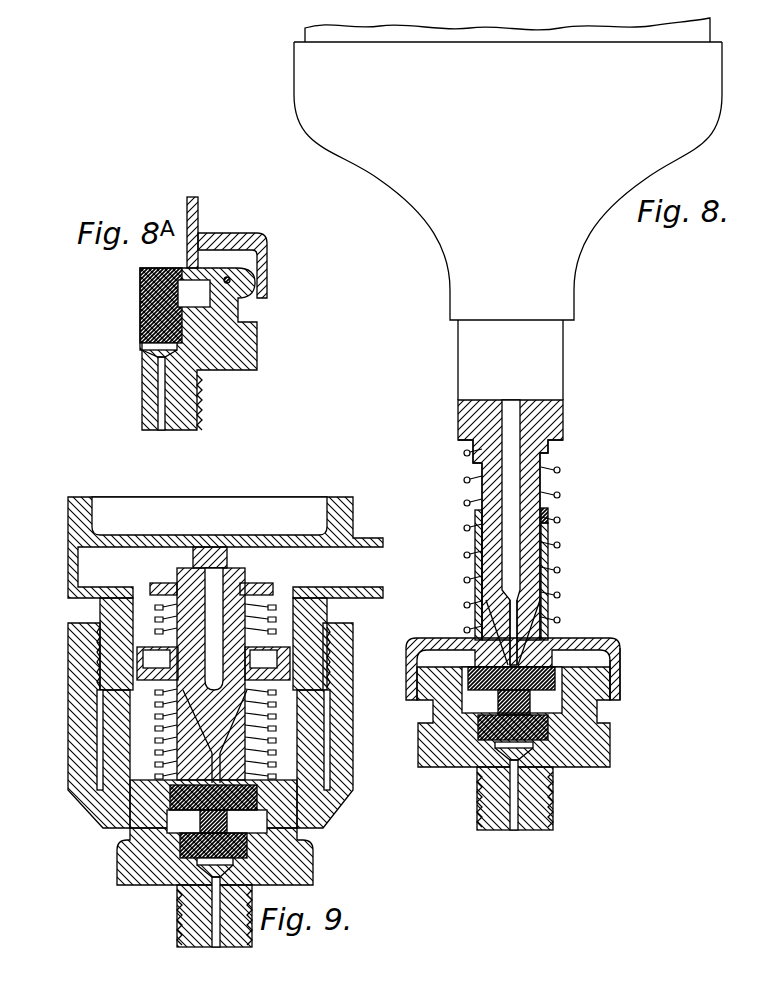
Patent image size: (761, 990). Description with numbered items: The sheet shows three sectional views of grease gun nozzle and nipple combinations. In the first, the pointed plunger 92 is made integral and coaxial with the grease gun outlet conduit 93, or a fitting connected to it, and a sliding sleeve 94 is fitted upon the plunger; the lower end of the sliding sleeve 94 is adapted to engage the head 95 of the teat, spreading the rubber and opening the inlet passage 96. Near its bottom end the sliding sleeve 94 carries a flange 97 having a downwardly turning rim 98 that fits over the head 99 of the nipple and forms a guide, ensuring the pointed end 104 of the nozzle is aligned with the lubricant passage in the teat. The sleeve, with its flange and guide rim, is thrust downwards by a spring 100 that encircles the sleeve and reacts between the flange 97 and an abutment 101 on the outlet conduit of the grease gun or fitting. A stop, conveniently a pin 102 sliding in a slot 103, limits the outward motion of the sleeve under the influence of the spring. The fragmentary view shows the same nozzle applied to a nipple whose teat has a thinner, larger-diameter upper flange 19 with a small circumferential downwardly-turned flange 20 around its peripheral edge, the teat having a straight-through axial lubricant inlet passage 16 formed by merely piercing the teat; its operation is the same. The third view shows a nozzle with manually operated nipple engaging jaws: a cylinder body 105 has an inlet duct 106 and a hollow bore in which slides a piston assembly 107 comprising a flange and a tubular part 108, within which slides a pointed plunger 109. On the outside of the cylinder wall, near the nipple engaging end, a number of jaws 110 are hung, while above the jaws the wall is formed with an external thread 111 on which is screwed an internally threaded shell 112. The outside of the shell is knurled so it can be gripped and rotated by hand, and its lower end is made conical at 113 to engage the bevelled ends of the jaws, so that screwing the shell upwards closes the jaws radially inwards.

In FIG. 8A, the axial lubricant inlet passage 16 is at (155, 303).
In FIG. 8A, the upper flange 19 is at (183, 268).
In FIG. 8A, the circumferential downwardly-turned flange 20 is at (229, 282).
In FIG. 8, the pointed plunger 92 is at (528, 592).
In FIG. 8, the grease gun outlet conduit 93 is at (542, 410).
In FIG. 8, the sliding sleeve 94 is at (476, 519).
In FIG. 8A, the sliding sleeve 94 is at (198, 221).
In FIG. 8, the head of the teat 95 is at (555, 673).
In FIG. 8, the inlet passage 96 is at (500, 732).
In FIG. 8, the flange 97 is at (590, 636).
In FIG. 8, the downwardly turning rim 98 is at (618, 697).
In FIG. 8A, the downwardly turning rim 98 is at (267, 244).
In FIG. 8, the head of the nipple 99 is at (435, 688).
In FIG. 8, the spring 100 is at (558, 496).
In FIG. 8, the abutment 101 is at (555, 443).
In FIG. 8, the pin 102 is at (548, 526).
In FIG. 8, the slot 103 is at (548, 557).
In FIG. 8, the needle 104 is at (508, 622).
In FIG. 9, the cylinder body 105 is at (300, 748).
In FIG. 9, the inlet duct 106 is at (337, 568).
In FIG. 9, the piston assembly 107 is at (293, 675).
In FIG. 9, the tubular part 108 is at (160, 760).
In FIG. 9, the pointed plunger 109 is at (227, 595).
In FIG. 9, the jaws 110 is at (103, 750).
In FIG. 9, the external thread 111 is at (97, 660).
In FIG. 9, the internally threaded shell 112 is at (347, 688).
In FIG. 9, the conical lower end 113 is at (327, 817).